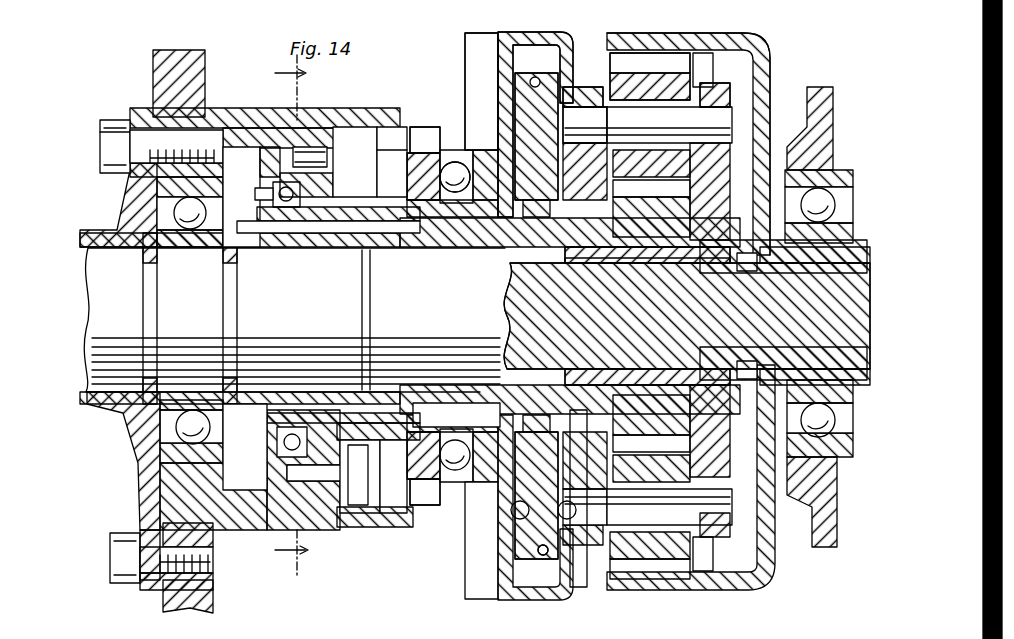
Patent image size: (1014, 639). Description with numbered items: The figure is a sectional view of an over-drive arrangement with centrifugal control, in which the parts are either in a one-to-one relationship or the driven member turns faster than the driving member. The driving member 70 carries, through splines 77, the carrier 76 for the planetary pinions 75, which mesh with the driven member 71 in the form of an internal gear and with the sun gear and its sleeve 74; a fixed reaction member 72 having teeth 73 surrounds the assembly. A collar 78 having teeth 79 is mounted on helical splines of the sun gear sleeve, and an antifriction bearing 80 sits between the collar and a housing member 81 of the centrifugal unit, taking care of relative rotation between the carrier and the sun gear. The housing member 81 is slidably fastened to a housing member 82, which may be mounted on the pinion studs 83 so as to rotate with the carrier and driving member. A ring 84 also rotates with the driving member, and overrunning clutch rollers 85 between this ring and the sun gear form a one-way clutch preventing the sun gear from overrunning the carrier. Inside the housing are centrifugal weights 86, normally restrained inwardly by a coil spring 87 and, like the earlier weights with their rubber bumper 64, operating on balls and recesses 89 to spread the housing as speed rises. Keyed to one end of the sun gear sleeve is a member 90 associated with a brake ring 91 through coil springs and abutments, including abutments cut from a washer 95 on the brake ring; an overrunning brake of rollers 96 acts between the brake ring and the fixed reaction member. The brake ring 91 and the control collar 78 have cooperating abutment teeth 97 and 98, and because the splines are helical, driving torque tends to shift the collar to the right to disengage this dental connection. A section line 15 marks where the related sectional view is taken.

The section line 15- 15 is at (285, 316).
The bumper or buffer 64 is at (548, 380).
The driving member 70 is at (294, 320).
The driven member 71 is at (770, 58).
The fixed reaction member 72 is at (232, 108).
The teeth 73 is at (388, 130).
The sun gear and its sleeve 74 is at (490, 255).
The planetary pinions 75 is at (645, 80).
The carrier 76 is at (733, 92).
The splines 77 is at (560, 265).
The collar 78 is at (432, 478).
The teeth 79 is at (423, 135).
The antifriction bearing 80 is at (452, 165).
The housing member 81 is at (500, 32).
The housing member 82 is at (568, 40).
The pinion studs 83 is at (628, 118).
The ring 84 is at (578, 87).
The overrunning clutch rollers 85 is at (570, 260).
The centrifugal weights 86 is at (517, 82).
The coil spring 87 is at (545, 555).
The balls and recesses 89 is at (583, 570).
The member 90 is at (270, 480).
The brake ring 91 is at (322, 212).
The washer 95 is at (316, 492).
The rollers 96 is at (305, 157).
The abutment teeth 97 is at (356, 500).
The abutment teeth 98 is at (404, 502).